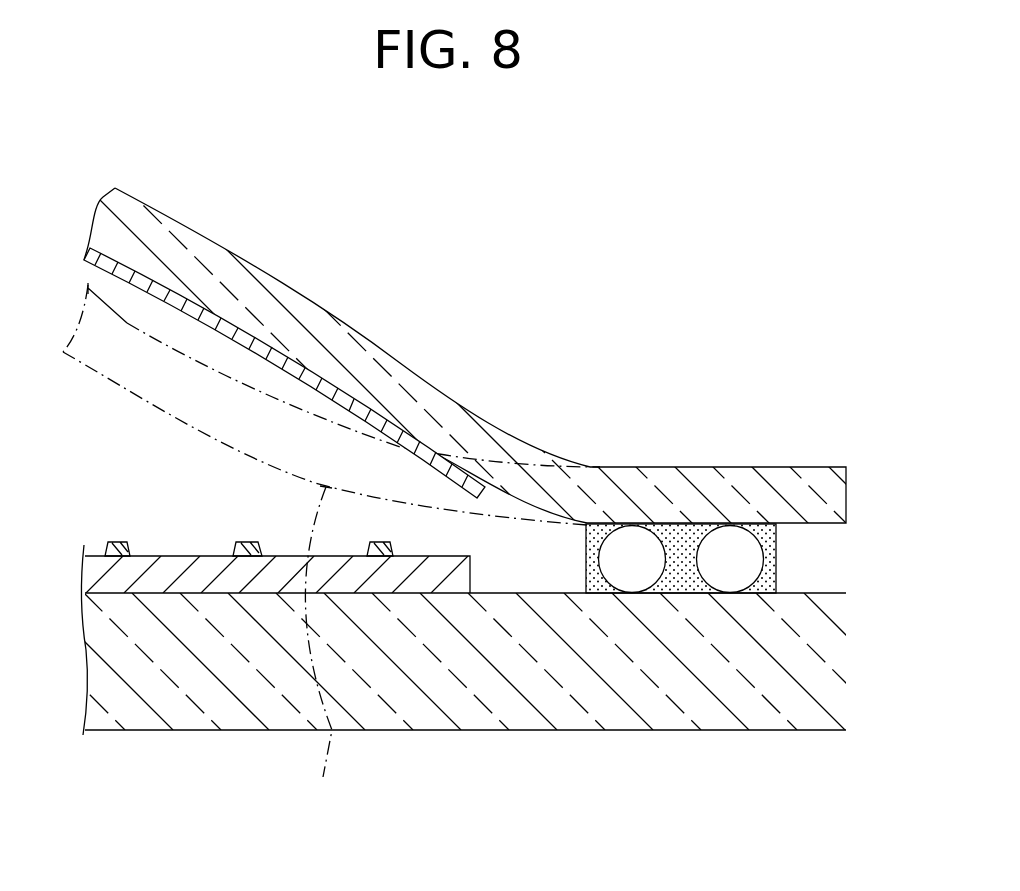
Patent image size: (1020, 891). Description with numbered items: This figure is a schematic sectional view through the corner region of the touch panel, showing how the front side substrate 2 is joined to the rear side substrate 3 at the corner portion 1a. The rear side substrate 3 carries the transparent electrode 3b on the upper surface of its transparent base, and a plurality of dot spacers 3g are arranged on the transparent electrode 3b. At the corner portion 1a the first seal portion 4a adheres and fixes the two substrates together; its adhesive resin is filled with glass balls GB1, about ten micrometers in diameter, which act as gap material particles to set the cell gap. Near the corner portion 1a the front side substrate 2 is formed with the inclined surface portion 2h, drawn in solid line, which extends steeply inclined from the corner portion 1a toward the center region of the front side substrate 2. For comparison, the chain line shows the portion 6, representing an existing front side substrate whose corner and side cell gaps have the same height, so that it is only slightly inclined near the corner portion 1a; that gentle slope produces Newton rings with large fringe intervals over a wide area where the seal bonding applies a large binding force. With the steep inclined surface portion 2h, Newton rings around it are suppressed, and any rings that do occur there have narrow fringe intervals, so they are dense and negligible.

The front side substrate 2 is at (273, 277).
The inclined surface portion 2h is at (413, 412).
The corner portion 1a is at (699, 467).
The first seal portion 4a is at (776, 548).
The glass balls GB1 is at (633, 568).
The rear side substrate 3 is at (468, 735).
The transparent electrode 3b is at (167, 573).
The dot spacers 3g is at (238, 541).
The portion 6 is at (318, 651).